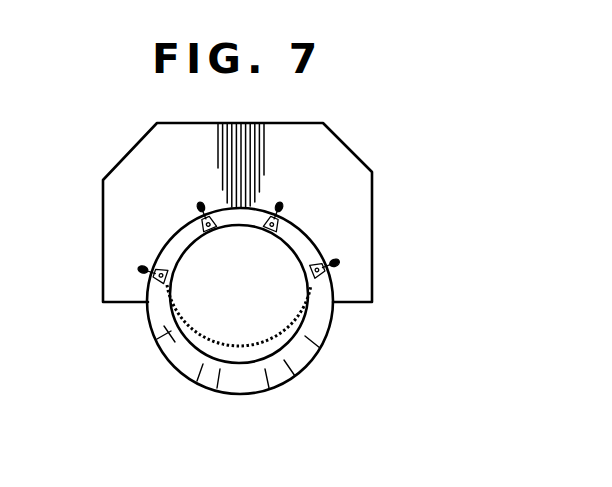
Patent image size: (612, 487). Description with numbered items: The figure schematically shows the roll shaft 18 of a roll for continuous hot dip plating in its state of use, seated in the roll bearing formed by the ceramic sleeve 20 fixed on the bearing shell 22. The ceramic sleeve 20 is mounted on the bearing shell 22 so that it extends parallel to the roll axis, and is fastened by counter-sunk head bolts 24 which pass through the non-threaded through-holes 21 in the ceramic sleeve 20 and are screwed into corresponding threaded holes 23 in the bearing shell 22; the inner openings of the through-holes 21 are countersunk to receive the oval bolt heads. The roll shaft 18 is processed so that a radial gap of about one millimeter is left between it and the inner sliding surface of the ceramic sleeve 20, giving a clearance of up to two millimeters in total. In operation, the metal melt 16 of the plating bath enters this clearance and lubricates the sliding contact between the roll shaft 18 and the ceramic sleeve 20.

The metal melt 16 is at (245, 372).
The roll shaft 18 is at (278, 342).
The ceramic sleeve 20 is at (170, 360).
The through-hole 21 is at (313, 334).
The bearing shell 22 is at (347, 160).
The threaded hole 23 is at (145, 270).
The bolt 24 is at (199, 210).